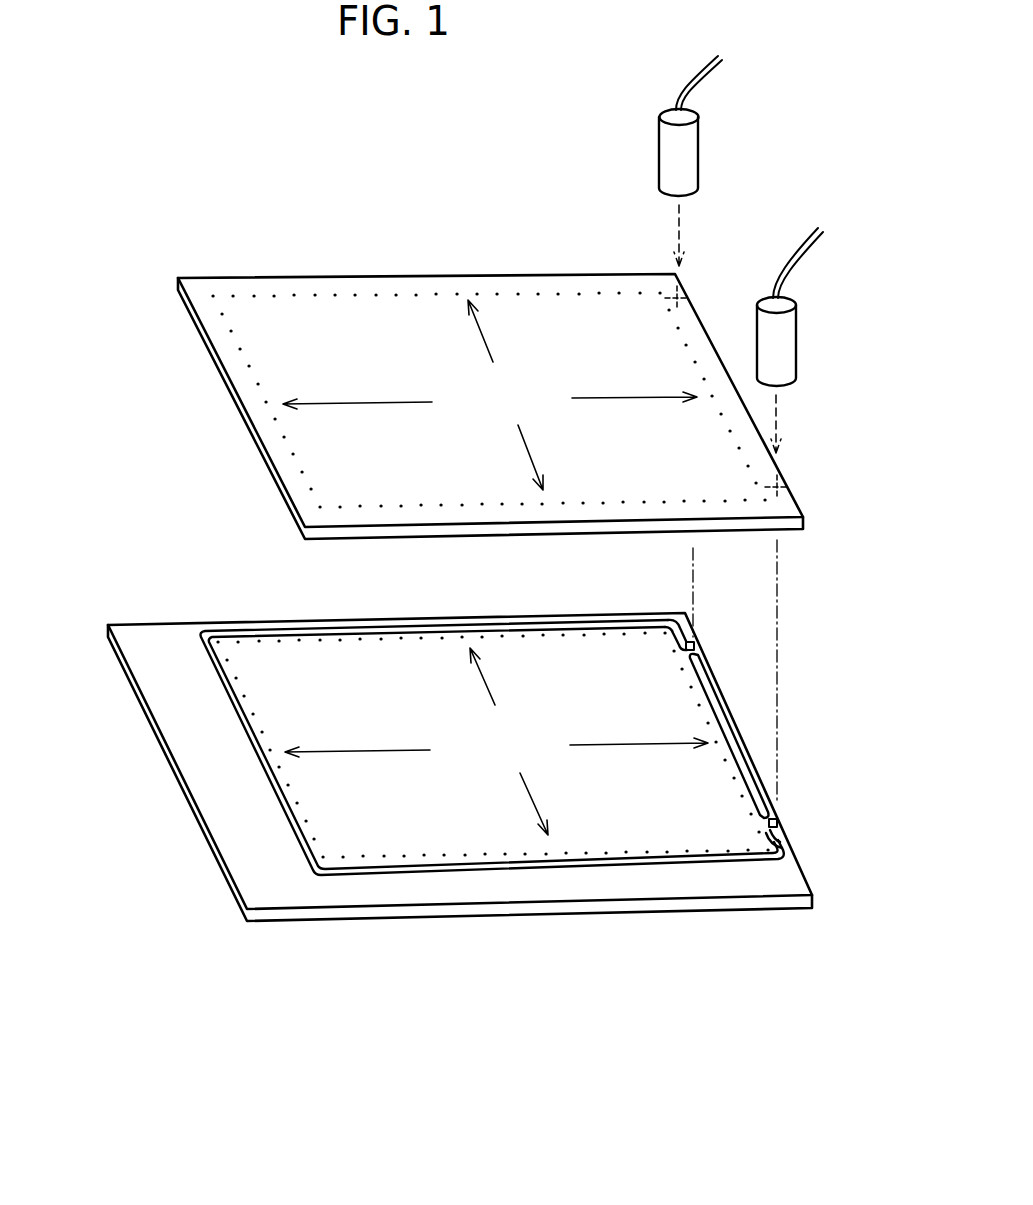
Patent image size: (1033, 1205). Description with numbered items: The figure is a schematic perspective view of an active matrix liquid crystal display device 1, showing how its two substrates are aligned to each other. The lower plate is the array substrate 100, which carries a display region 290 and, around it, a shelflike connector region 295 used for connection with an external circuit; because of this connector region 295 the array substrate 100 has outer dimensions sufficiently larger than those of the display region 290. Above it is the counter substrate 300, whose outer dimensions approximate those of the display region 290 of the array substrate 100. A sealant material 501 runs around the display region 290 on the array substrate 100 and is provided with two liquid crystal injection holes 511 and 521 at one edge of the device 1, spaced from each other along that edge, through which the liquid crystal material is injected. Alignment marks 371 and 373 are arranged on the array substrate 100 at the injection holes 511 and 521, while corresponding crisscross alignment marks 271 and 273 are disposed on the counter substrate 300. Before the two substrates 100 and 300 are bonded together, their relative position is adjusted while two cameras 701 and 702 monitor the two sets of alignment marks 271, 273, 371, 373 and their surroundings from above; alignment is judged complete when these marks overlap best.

The active matrix liquid crystal display device 1 is at (452, 109).
The array substrate 100 is at (159, 797).
The counter substrate 300 is at (210, 398).
The display region 290 is at (500, 397).
The connector region 295 is at (235, 812).
The alignment mark 271 is at (697, 312).
The alignment mark 273 is at (797, 503).
The camera 701 is at (659, 152).
The camera 702 is at (797, 366).
The sealant material 501 is at (465, 868).
The liquid crystal injection hole 511 is at (693, 637).
The liquid crystal injection hole 521 is at (784, 845).
The alignment mark 371 is at (697, 637).
The alignment mark 373 is at (777, 823).